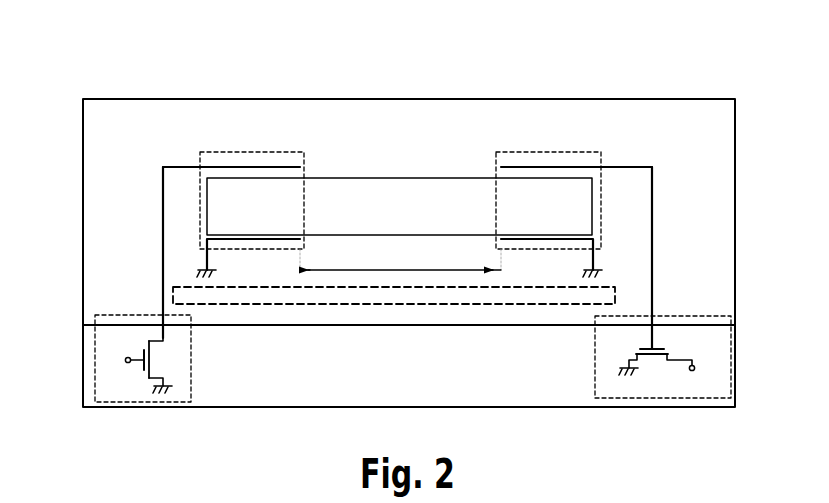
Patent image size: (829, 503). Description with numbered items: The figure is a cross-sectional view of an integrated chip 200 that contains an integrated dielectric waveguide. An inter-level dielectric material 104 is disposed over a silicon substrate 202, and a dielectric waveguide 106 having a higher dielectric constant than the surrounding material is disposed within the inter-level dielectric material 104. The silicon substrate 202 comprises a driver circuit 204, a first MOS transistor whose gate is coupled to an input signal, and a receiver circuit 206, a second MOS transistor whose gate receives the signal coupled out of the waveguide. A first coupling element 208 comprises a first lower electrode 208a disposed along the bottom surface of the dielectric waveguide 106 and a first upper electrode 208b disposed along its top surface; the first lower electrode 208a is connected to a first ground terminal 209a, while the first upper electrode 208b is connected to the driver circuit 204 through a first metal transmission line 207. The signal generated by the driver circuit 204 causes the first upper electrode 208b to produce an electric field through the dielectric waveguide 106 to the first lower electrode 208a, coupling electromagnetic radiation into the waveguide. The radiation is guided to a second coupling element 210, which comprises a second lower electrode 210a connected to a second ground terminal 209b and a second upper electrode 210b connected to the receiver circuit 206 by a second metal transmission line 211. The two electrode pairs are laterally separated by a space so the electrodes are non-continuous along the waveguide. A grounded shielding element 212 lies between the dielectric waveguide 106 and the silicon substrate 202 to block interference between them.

The integrated chip 200 is at (90, 41).
The inter-level dielectric material 104 is at (735, 196).
The dielectric waveguide 106 is at (376, 178).
The silicon substrate 202 is at (735, 358).
The driver circuit 204 is at (191, 358).
The receiver circuit 206 is at (595, 358).
The first metal transmission line 207 is at (163, 228).
The first coupling element 208 is at (270, 152).
The first lower electrode 208a is at (300, 246).
The first upper electrode 208b is at (300, 165).
The first ground terminal 209a is at (222, 271).
The second ground terminal 209b is at (578, 271).
The second coupling element 210 is at (561, 152).
The second lower electrode 210a is at (501, 246).
The second upper electrode 210b is at (501, 165).
The second metal transmission line 211 is at (652, 226).
The grounded shielding element 212 is at (603, 288).